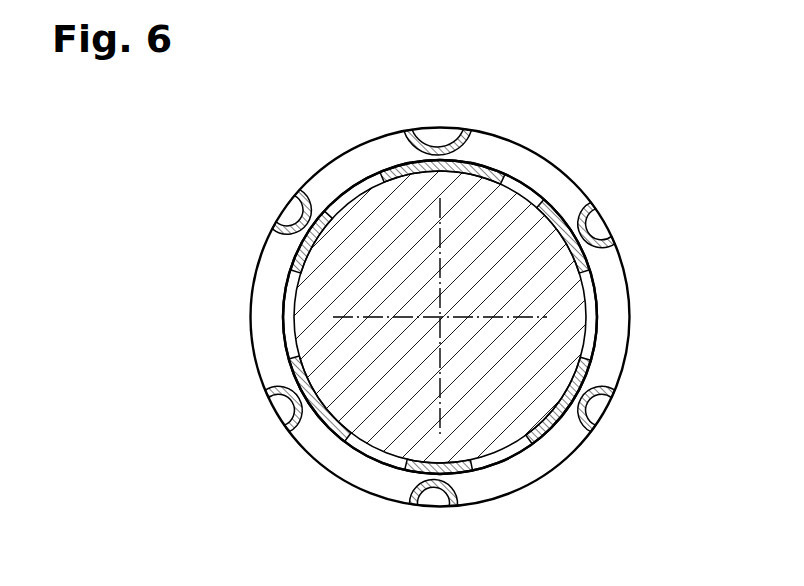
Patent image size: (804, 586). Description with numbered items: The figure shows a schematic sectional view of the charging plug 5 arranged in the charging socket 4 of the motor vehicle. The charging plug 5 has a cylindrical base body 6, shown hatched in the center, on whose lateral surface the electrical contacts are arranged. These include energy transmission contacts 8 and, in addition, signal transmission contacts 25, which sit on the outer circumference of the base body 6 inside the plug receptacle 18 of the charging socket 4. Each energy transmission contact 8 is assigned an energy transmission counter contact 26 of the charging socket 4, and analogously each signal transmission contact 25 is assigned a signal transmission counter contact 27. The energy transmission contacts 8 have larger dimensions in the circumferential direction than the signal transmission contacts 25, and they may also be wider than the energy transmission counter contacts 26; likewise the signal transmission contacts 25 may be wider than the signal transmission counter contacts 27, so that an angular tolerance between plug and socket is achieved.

The charging socket 4 is at (541, 133).
The charging plug 5 is at (560, 195).
The base body 6 is at (548, 298).
The energy transmission contacts 8 is at (470, 168).
The plug receptacle 18 is at (536, 186).
The signal transmission contacts 25 is at (298, 255).
The energy transmission counter contact 26 is at (437, 152).
The signal transmission counter contact 27 is at (293, 233).